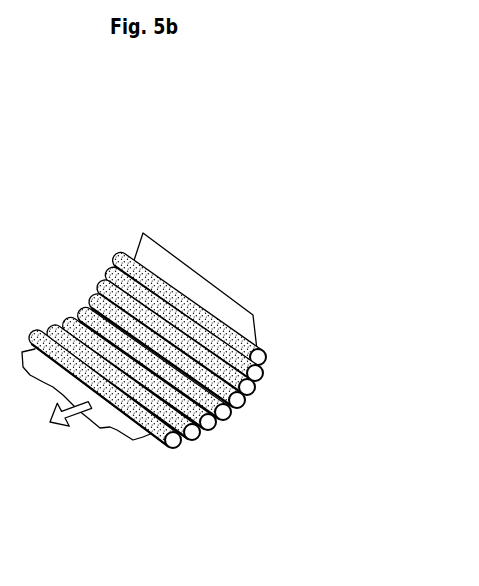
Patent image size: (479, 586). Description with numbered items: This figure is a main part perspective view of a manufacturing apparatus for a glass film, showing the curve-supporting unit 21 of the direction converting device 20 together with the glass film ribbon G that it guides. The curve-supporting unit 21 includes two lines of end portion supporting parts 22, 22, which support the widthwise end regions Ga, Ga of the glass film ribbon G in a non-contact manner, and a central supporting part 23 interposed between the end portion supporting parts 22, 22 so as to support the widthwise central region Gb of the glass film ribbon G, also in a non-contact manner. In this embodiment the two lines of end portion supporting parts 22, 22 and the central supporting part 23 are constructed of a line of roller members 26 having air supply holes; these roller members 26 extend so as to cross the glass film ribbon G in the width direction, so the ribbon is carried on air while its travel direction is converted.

The direction converting device 20 is at (92, 237).
The curve-supporting unit 21 is at (160, 452).
The end portion supporting parts 22 is at (87, 282).
The central supporting part 23 is at (118, 405).
The roller members 26 is at (83, 307).
The glass film ribbon G is at (232, 283).
The widthwise end regions Ga is at (150, 243).
The widthwise central region Gb is at (195, 290).